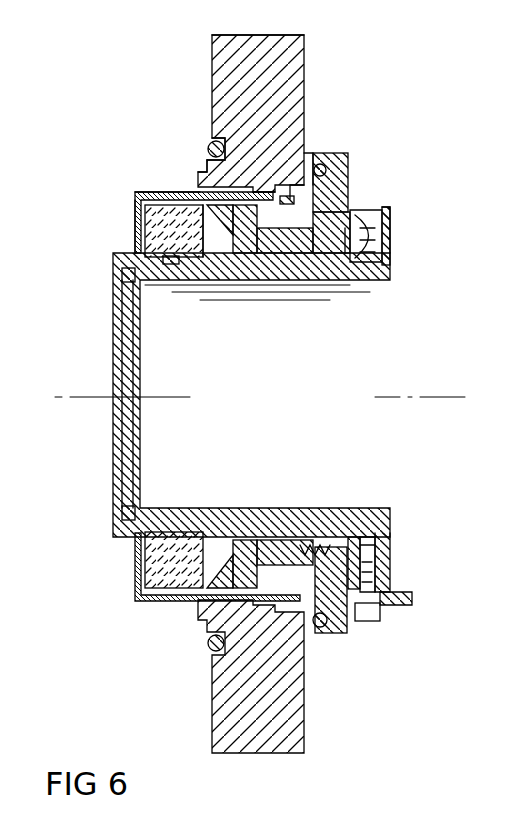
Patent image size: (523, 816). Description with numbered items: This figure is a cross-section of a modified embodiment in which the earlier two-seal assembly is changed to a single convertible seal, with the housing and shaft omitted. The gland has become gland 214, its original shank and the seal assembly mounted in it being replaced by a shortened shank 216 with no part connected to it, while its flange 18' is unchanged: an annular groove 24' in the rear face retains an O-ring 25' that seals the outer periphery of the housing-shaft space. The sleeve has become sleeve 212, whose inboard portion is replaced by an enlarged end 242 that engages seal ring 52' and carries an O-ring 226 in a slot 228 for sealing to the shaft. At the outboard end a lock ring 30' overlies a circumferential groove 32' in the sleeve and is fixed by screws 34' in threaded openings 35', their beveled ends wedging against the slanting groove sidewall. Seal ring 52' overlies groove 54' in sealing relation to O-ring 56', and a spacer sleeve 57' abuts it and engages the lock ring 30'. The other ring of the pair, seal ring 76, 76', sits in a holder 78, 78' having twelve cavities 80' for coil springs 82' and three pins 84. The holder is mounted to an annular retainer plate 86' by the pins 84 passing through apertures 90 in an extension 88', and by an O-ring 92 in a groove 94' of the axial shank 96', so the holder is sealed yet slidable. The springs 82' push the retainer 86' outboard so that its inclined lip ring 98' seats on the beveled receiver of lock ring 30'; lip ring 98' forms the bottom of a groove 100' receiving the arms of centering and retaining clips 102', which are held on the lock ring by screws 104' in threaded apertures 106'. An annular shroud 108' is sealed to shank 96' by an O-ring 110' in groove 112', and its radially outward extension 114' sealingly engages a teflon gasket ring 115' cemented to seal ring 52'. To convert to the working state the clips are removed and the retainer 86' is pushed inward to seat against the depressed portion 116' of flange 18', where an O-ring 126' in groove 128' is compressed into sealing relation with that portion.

The flange 18' is at (251, 98).
The annular groove 24' is at (199, 129).
The O-ring 25' is at (204, 117).
The lock ring 30' is at (406, 236).
The circumferential groove 32' is at (396, 546).
The screws 34' is at (389, 220).
The threaded openings 35' is at (395, 242).
The seal ring 52' is at (174, 529).
The circumferential groove 54' is at (174, 273).
The O-ring 56' is at (161, 295).
The spacer sleeve 57' is at (218, 275).
The seal ring 76 is at (231, 268).
The seal ring 76' is at (218, 525).
The holder 78 is at (256, 271).
The holder 78' is at (246, 533).
The cavities 80' is at (285, 513).
The coil spring 82' is at (315, 517).
The pin 84 is at (322, 240).
The retainer plate 86' is at (363, 162).
The extension 88' is at (354, 525).
The apertures 90 is at (345, 240).
The O-ring 92 is at (290, 240).
The groove 94' is at (347, 176).
The axial shank 96' is at (255, 173).
The lip ring 98' is at (400, 569).
The groove 100' is at (388, 208).
The centering and retaining clips 102' is at (425, 608).
The screws 104' is at (397, 626).
The threaded apertures 106' is at (401, 543).
The annular shroud 108' is at (215, 411).
The O-ring 110' is at (268, 168).
The annular groove 112' is at (282, 154).
The radially outward extension 114' is at (104, 215).
The gasket ring 115' is at (140, 177).
The depressed portion 116' is at (329, 148).
The O-ring 126' is at (335, 651).
The groove 128' is at (352, 604).
The sleeve 212 is at (393, 274).
The gland 214 is at (207, 33).
The shortened shank 216 is at (200, 173).
The O-ring 226 is at (128, 508).
The slot 228 is at (138, 490).
The enlarged end 242 is at (126, 272).